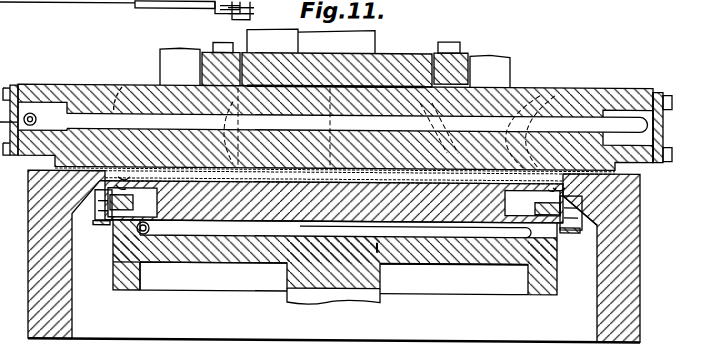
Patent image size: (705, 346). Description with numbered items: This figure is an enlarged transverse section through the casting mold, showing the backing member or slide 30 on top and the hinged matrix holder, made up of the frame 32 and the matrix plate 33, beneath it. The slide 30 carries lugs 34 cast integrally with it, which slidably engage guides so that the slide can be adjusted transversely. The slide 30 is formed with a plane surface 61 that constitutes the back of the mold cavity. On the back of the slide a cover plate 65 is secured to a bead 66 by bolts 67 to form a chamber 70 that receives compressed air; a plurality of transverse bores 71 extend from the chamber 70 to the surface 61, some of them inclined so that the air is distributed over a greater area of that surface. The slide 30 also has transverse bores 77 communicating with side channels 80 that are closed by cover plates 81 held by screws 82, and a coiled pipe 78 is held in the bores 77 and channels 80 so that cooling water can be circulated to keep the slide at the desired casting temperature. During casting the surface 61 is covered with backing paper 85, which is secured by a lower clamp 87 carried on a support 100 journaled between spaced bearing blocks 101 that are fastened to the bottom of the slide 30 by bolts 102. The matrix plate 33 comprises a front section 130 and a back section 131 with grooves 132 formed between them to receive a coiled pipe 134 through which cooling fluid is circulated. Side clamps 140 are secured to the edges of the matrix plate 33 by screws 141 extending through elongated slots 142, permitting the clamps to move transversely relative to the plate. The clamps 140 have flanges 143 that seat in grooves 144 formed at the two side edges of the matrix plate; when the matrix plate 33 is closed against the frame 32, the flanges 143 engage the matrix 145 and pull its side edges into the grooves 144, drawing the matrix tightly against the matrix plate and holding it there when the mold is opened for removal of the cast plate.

The slide 30 is at (565, 94).
The frame 32 is at (640, 252).
The matrix plate 33 is at (230, 269).
The lugs 34 is at (505, 59).
The plane surface 61 is at (477, 157).
The cover plate 65 is at (393, 64).
The bead 66 is at (478, 57).
The bolts 67 is at (449, 40).
The chamber 70 is at (320, 78).
The transverse bores 71 is at (330, 120).
The transverse bores 77 is at (117, 110).
The coiled pipe 78 is at (611, 119).
The side channels 80 is at (665, 135).
The cover plates 81 is at (665, 113).
The screws 82 is at (672, 155).
The backing paper 85 is at (517, 164).
The front section 130 is at (287, 213).
The back section 131 is at (190, 249).
The grooves 132 is at (467, 240).
The coiled pipe 134 is at (423, 229).
The side clamps 140 is at (570, 229).
The screws 141 is at (335, 210).
The elongated slots 142 is at (563, 196).
The flanges 143 is at (555, 184).
The grooves 144 is at (553, 186).
The matrix 145 is at (488, 219).
The lower clamp 87 is at (100, 0).
The support 100 is at (130, 0).
The bearing blocks 101 is at (252, 8).
The bolts 102 is at (228, 10).